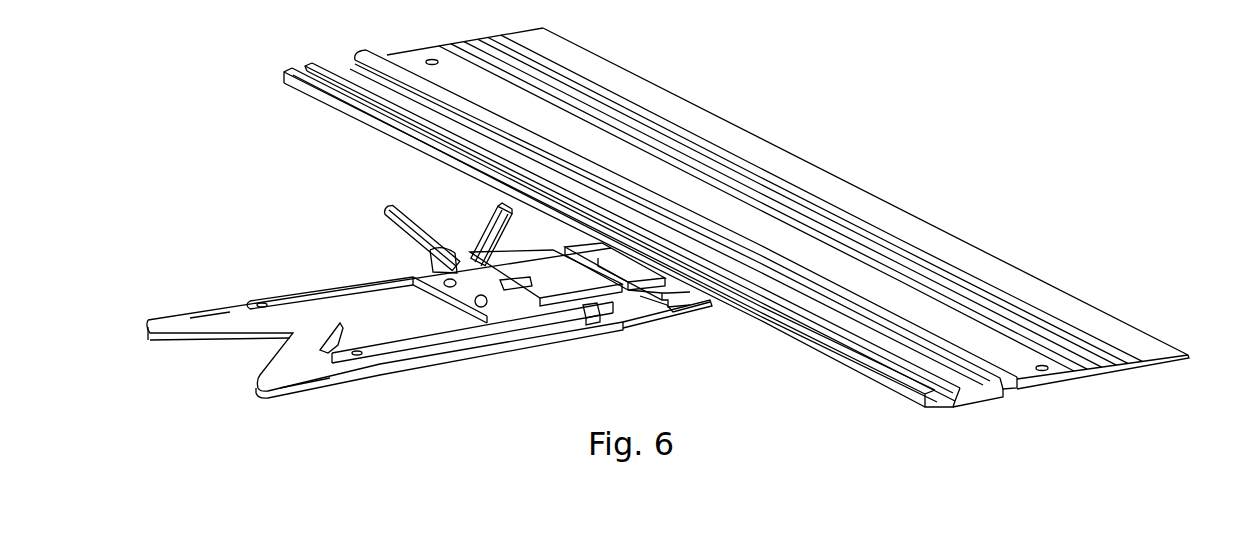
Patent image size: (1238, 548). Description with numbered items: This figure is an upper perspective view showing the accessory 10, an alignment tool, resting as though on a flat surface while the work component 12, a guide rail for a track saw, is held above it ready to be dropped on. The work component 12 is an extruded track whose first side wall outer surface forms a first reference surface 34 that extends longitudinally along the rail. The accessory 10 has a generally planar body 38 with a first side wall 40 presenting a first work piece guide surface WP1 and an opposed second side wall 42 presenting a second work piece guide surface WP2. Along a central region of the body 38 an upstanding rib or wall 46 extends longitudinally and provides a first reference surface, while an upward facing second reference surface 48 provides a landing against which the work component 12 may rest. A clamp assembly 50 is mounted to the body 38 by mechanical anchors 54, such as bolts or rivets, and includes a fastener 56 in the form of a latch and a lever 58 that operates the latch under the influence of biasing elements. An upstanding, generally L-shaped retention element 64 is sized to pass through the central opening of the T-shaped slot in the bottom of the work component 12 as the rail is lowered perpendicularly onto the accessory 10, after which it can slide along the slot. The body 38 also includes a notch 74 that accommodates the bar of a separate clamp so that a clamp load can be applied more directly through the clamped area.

The accessory 10 is at (302, 246).
The work component 12 is at (736, 226).
The first reference surface 34 is at (810, 344).
The body 38 is at (190, 316).
The first side wall 40 is at (250, 299).
The second side wall 42 is at (362, 373).
The upstanding rib or wall 46 is at (583, 305).
The second reference surface 48 is at (610, 317).
The clamp assembly 50 is at (517, 300).
The mechanical anchors 54 is at (452, 290).
The fastener 56 is at (495, 213).
The lever 58 is at (388, 213).
The retention element 64 is at (633, 277).
The notch 74 is at (682, 312).
The first work piece guide surface WP1 is at (215, 303).
The second work piece guide surface WP2 is at (292, 390).